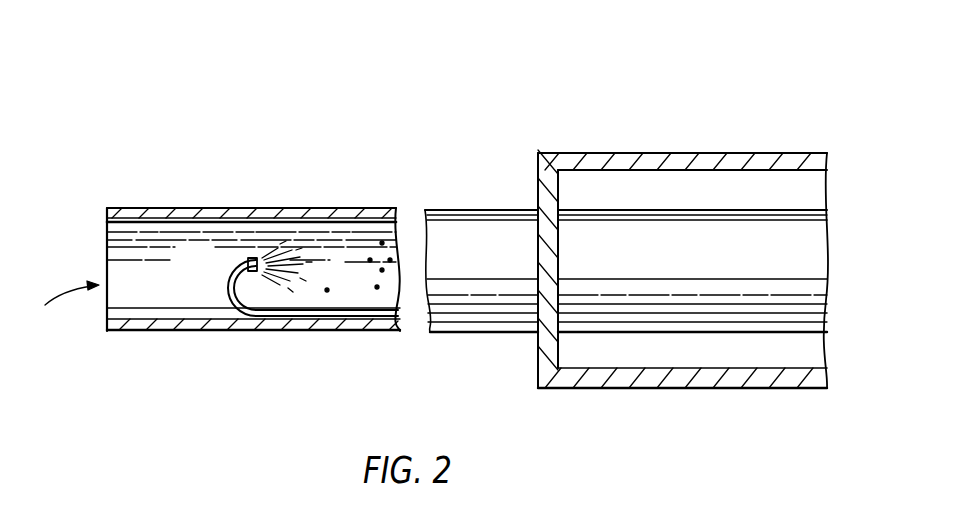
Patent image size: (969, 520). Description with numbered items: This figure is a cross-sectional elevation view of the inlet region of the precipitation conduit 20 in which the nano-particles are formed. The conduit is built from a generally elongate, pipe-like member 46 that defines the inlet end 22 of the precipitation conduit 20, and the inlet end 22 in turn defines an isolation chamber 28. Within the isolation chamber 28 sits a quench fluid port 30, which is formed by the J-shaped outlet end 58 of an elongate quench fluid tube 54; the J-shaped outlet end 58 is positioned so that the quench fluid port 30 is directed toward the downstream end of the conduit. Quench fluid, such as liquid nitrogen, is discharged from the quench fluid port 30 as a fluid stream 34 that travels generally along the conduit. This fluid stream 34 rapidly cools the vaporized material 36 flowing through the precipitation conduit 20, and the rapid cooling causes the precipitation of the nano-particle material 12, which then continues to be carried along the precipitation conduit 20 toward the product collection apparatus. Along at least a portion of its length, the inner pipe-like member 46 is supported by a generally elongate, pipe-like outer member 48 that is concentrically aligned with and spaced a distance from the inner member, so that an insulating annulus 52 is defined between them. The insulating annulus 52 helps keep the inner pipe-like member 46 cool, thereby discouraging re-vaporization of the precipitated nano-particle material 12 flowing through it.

The precipitation conduit 20 is at (131, 109).
The inlet end 22 is at (107, 237).
The pipe-like member 46 is at (190, 210).
The isolation chamber 28 is at (210, 262).
The nano-particle material 12 is at (343, 282).
The J-shaped outlet end 58 is at (231, 293).
The quench fluid port 30 is at (249, 257).
The fluid stream 34 is at (286, 252).
The quench fluid tube 54 is at (380, 302).
The vaporized material 36 is at (71, 292).
The insulating annulus 52 is at (618, 197).
The pipe-like outer member 48 is at (743, 154).